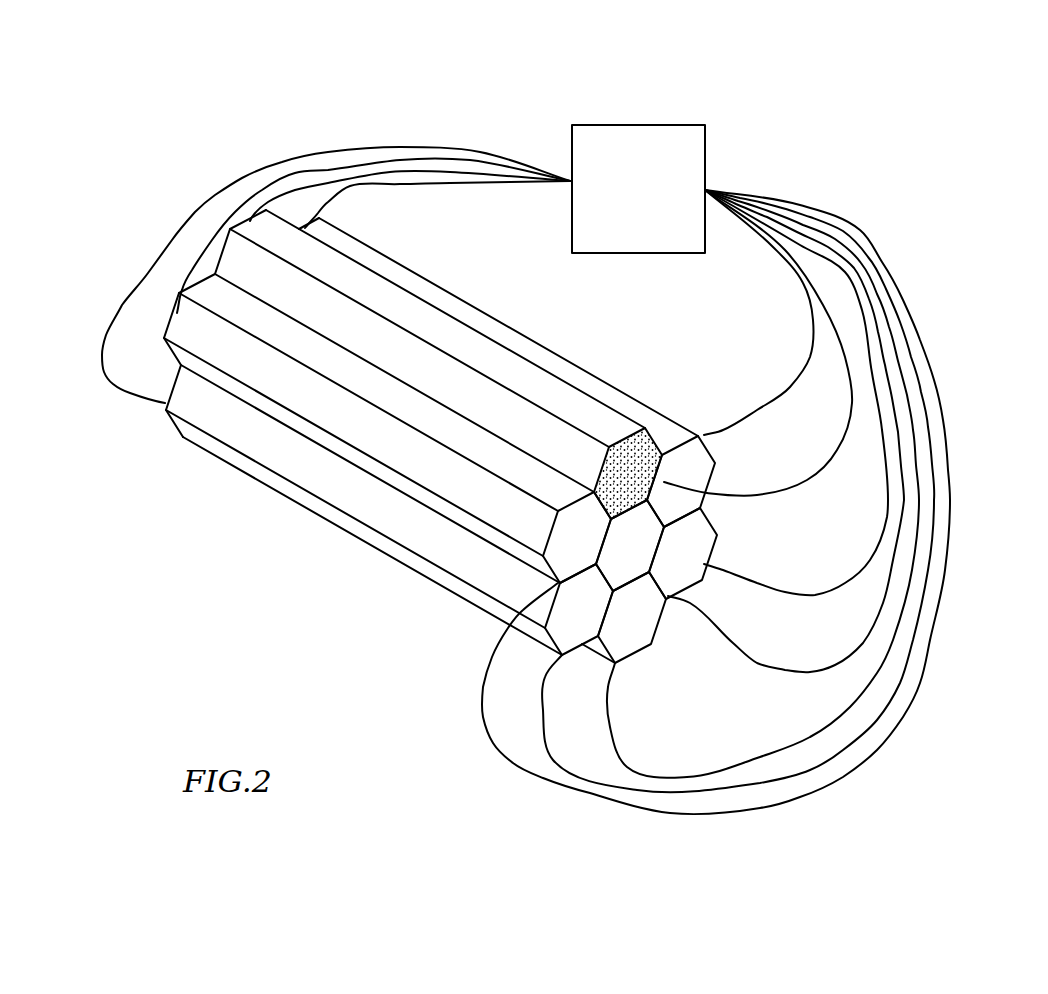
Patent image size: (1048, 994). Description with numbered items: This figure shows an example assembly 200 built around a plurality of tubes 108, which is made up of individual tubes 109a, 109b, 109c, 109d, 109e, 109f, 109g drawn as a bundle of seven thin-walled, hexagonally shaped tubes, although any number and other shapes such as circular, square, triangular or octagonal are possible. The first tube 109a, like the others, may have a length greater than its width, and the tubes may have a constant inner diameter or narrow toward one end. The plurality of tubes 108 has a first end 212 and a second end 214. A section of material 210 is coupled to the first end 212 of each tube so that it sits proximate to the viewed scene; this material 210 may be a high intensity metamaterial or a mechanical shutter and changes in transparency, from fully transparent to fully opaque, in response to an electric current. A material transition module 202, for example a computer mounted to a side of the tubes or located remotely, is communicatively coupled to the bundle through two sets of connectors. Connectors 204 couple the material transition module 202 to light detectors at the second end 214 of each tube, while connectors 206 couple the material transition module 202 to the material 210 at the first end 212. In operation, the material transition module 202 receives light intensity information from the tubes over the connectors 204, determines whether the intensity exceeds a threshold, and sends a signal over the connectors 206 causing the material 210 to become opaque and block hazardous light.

The assembly 200 is at (146, 556).
The material transition module 202 is at (665, 124).
The connectors 204 is at (196, 210).
The connectors 206 is at (880, 262).
The plurality of tubes 108 is at (470, 471).
The first tube 109a is at (395, 445).
The individual tube 109b is at (438, 364).
The individual tube 109c is at (583, 384).
The individual tube 109d is at (569, 650).
The individual tube 109e is at (616, 568).
The individual tube 109f is at (694, 540).
The individual tube 109g is at (652, 605).
The material 210 is at (622, 456).
The first end 212 is at (497, 632).
The second end 214 is at (192, 452).